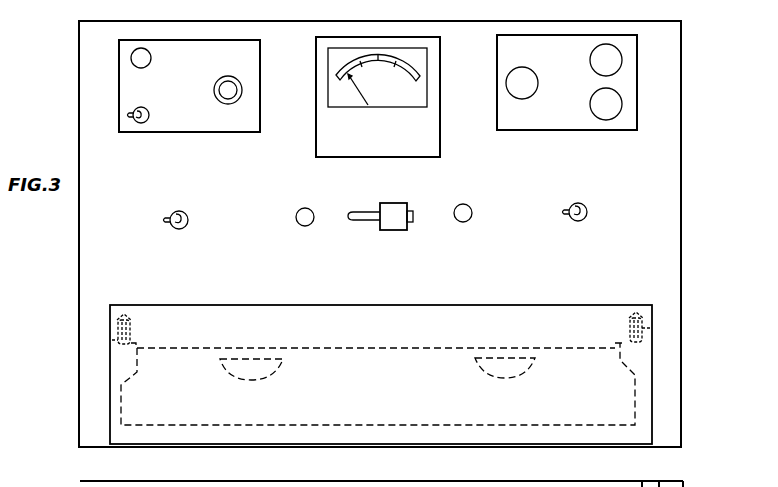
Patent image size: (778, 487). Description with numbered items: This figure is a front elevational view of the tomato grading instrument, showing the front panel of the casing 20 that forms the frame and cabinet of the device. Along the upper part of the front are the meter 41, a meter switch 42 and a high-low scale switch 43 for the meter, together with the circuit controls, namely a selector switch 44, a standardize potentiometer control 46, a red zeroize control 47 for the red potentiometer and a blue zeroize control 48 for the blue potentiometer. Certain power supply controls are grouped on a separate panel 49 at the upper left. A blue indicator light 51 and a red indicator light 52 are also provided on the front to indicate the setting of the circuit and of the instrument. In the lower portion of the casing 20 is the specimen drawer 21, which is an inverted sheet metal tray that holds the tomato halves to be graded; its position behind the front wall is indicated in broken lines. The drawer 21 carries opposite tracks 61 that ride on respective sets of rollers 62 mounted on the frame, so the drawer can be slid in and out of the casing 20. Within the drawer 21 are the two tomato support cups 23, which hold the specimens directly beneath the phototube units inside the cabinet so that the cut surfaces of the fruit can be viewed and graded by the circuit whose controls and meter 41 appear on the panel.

The casing 20 is at (683, 266).
The drawer 21 is at (513, 307).
The tomato support cup 23 is at (517, 370).
The meter 41 is at (443, 152).
The meter switch 42 is at (186, 228).
The high-low scale switch 43 is at (584, 220).
The selector switch 44 is at (405, 230).
The standardize potentiometer control 46 is at (530, 97).
The red zeroize control 47 is at (589, 59).
The blue zeroize control 48 is at (601, 120).
The panel 49 is at (203, 133).
The blue indicator light 51 is at (308, 226).
The red indicator light 52 is at (468, 221).
The track 61 is at (131, 316).
The roller 62 is at (118, 340).